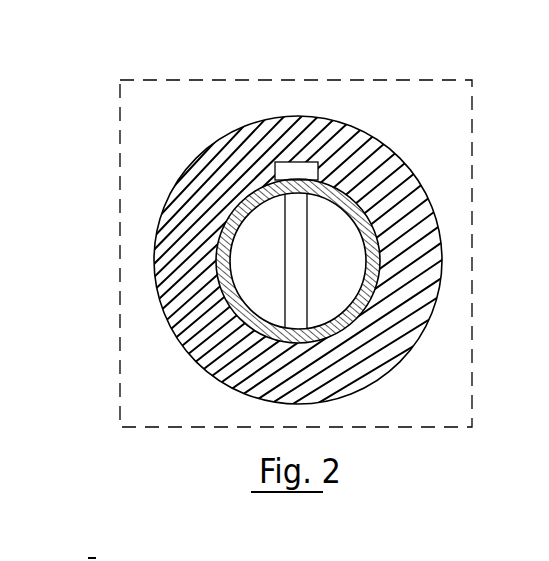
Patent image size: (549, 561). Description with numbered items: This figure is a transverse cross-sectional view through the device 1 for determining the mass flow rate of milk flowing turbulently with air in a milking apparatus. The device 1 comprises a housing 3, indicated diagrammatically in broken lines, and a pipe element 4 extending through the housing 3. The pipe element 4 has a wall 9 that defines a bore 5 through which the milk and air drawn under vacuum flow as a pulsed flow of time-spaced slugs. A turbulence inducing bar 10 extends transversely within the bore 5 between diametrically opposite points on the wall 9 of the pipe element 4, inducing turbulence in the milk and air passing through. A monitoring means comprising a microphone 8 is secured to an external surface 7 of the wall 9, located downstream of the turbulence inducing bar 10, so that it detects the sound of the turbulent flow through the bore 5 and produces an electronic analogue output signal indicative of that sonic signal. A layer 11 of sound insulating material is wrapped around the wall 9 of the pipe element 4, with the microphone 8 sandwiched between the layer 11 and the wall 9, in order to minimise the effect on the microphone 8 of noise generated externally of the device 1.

The device 1 is at (477, 60).
The housing 3 is at (148, 78).
The pipe element 4 is at (373, 235).
The bore 5 is at (330, 298).
The external surface 7 is at (370, 182).
The microphone 8 is at (297, 172).
The wall 9 is at (373, 272).
The turbulence inducing bar 10 is at (295, 302).
The layer of sound insulating material 11 is at (345, 377).